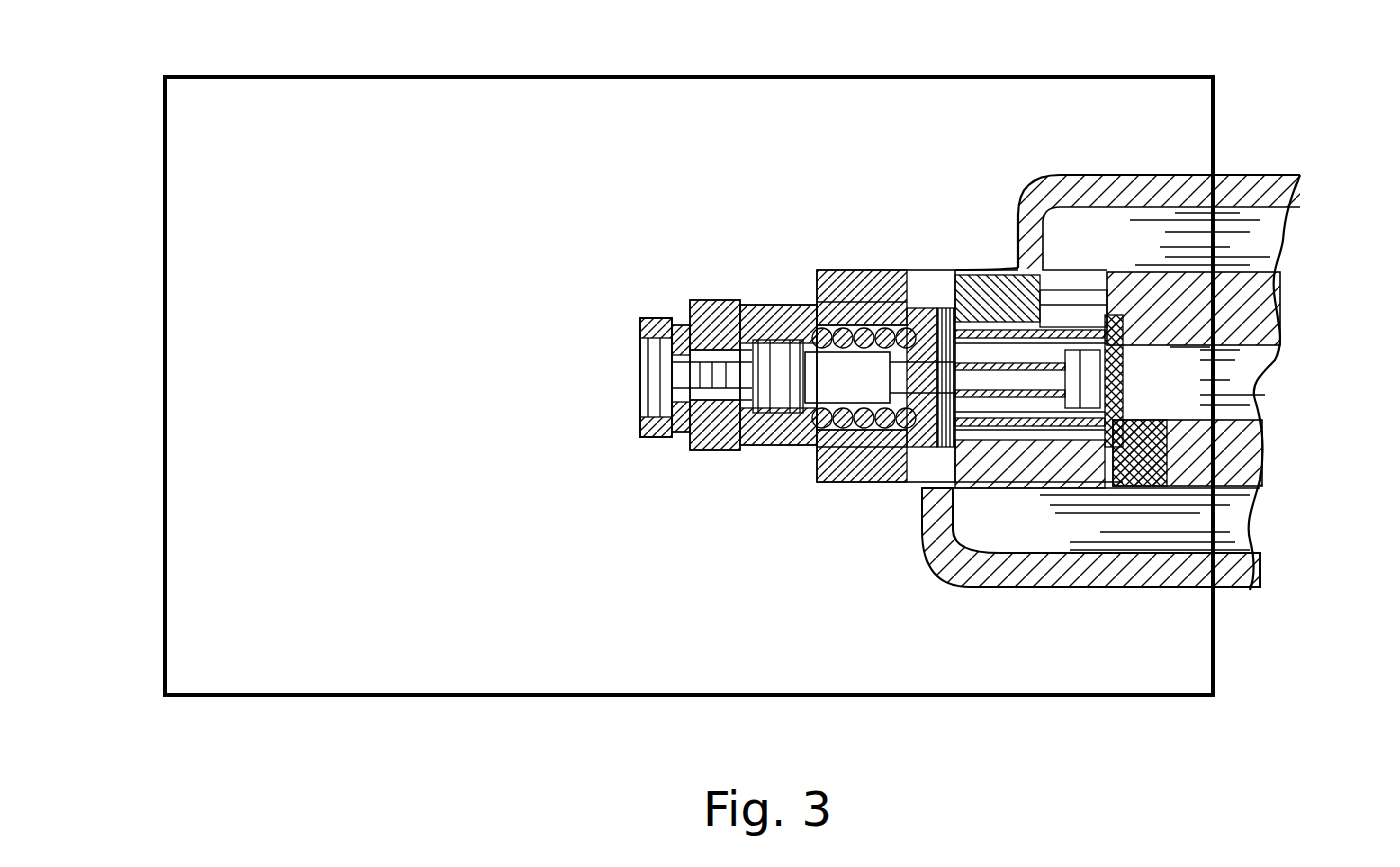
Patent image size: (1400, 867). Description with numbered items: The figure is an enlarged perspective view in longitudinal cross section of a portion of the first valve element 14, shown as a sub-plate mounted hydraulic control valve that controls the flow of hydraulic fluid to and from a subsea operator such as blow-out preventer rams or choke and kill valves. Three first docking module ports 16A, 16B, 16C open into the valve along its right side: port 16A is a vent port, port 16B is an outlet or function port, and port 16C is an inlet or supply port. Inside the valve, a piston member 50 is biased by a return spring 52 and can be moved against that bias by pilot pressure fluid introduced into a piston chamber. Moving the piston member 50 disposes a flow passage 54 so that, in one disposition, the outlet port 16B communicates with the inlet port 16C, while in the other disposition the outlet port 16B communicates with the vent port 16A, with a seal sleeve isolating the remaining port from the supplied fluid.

The first valve element 14 is at (591, 105).
The piston member 50 is at (783, 345).
The return spring 52 is at (840, 330).
The flow passage 54 is at (966, 322).
The first docking module port 16A is at (1252, 243).
The first docking module port 16B is at (1240, 387).
The first docking module port 16C is at (1233, 524).